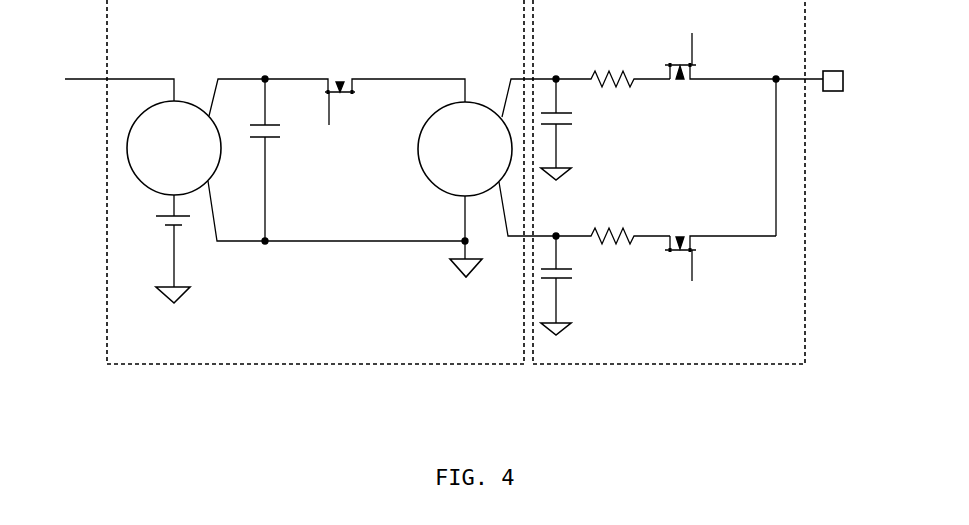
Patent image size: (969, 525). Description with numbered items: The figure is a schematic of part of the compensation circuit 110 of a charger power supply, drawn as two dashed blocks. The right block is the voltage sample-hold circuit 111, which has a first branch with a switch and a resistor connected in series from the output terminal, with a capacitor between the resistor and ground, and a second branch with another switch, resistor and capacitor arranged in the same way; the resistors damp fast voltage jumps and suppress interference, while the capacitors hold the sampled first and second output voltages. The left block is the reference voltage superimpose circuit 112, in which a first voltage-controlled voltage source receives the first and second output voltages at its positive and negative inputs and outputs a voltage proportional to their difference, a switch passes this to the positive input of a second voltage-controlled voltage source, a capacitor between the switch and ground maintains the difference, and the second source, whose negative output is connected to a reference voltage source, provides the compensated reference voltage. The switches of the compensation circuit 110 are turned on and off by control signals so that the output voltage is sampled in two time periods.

The compensation circuit 110 is at (455, 216).
The voltage sample-hold circuit 111 is at (775, 353).
The reference voltage superimpose circuit 112 is at (472, 353).